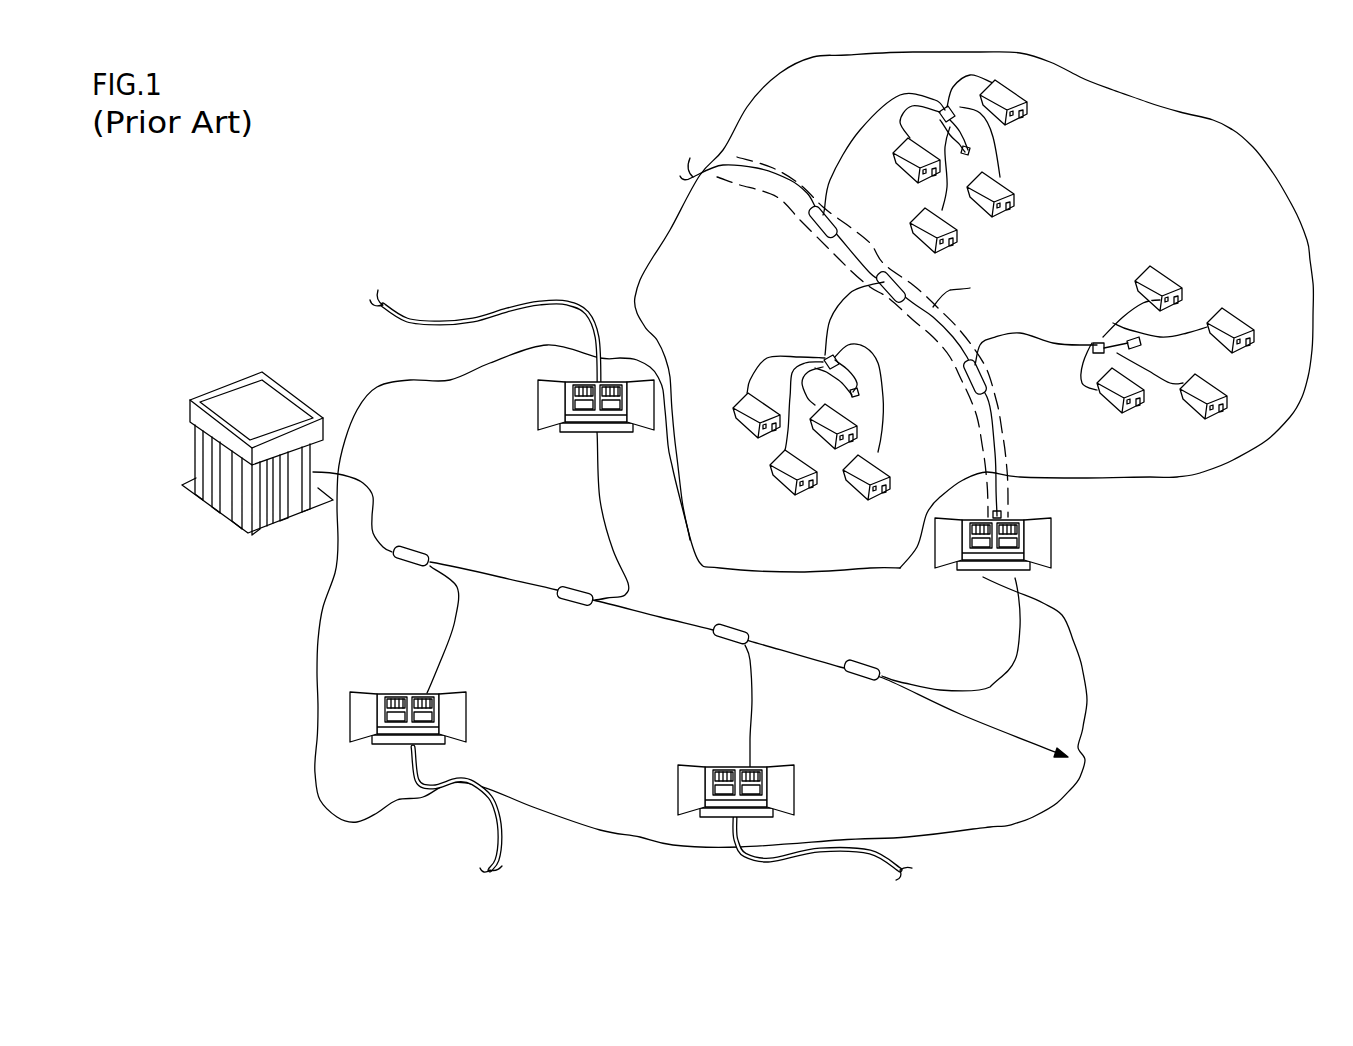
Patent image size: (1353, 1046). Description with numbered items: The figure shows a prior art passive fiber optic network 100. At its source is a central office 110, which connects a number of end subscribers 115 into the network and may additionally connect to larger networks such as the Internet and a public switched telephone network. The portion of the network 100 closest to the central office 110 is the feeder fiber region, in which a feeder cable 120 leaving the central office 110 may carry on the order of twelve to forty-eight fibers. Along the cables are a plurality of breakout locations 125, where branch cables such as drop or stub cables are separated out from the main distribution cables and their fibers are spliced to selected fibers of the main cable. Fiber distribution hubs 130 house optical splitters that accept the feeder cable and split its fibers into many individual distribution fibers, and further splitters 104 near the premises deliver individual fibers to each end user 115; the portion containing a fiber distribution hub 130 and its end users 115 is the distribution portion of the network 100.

The network 100 is at (417, 203).
The optical splitter 104 is at (947, 112).
The central office 110 is at (193, 447).
The end subscribers 115 is at (1002, 188).
The feeder cable 120 is at (375, 497).
The breakout locations 125 is at (407, 547).
The fiber distribution hubs 130 is at (655, 432).